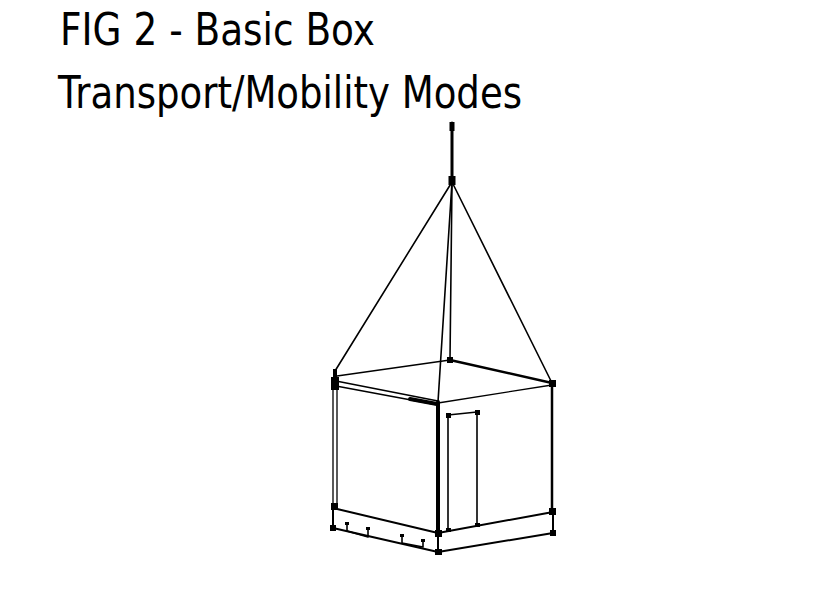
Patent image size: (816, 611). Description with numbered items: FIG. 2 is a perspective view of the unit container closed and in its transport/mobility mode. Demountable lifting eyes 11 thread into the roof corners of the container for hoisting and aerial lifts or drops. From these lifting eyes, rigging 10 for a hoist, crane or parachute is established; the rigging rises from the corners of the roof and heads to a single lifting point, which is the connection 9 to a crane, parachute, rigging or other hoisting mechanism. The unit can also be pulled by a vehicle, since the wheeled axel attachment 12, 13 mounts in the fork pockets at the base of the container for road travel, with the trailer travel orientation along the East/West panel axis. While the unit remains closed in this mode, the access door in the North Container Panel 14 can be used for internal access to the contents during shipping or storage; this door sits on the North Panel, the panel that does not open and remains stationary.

The connection to crane, parachute, rigging or other hoisting mechanisms 9 is at (575, 162).
The rigging for hoist, crane or parachute 10 is at (379, 279).
The demountable lifting eyes 11 is at (259, 315).
The wheeled axel attachment 12 is at (246, 417).
The wheeled axel attachment 13 is at (281, 465).
The access door in North Container Panel 14 is at (570, 450).